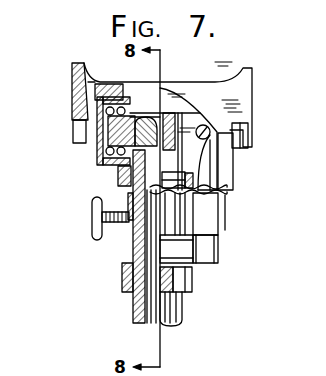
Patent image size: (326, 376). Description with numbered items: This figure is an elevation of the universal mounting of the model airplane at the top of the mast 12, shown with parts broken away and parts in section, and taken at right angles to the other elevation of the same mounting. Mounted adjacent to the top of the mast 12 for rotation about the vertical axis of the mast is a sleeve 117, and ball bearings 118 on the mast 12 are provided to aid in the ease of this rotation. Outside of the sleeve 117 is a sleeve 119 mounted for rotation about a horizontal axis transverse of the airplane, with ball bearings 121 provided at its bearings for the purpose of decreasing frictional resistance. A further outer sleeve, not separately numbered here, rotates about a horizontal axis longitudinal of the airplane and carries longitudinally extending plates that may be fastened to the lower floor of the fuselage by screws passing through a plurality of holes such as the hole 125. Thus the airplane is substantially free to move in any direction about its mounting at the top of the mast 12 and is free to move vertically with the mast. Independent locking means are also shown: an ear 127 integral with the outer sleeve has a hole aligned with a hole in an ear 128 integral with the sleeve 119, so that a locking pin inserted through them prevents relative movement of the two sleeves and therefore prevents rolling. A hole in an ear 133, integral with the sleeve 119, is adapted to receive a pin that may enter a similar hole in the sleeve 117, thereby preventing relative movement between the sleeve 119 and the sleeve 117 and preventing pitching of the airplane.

The mast 12 is at (185, 303).
The sleeve 117 is at (125, 236).
The ball bearings 118 is at (110, 188).
The sleeve 119 is at (93, 148).
The ball bearings 121 is at (96, 168).
The hole 125 is at (325, 208).
The ear 127 is at (253, 132).
The ear 128 is at (230, 143).
The ear 133 is at (220, 252).